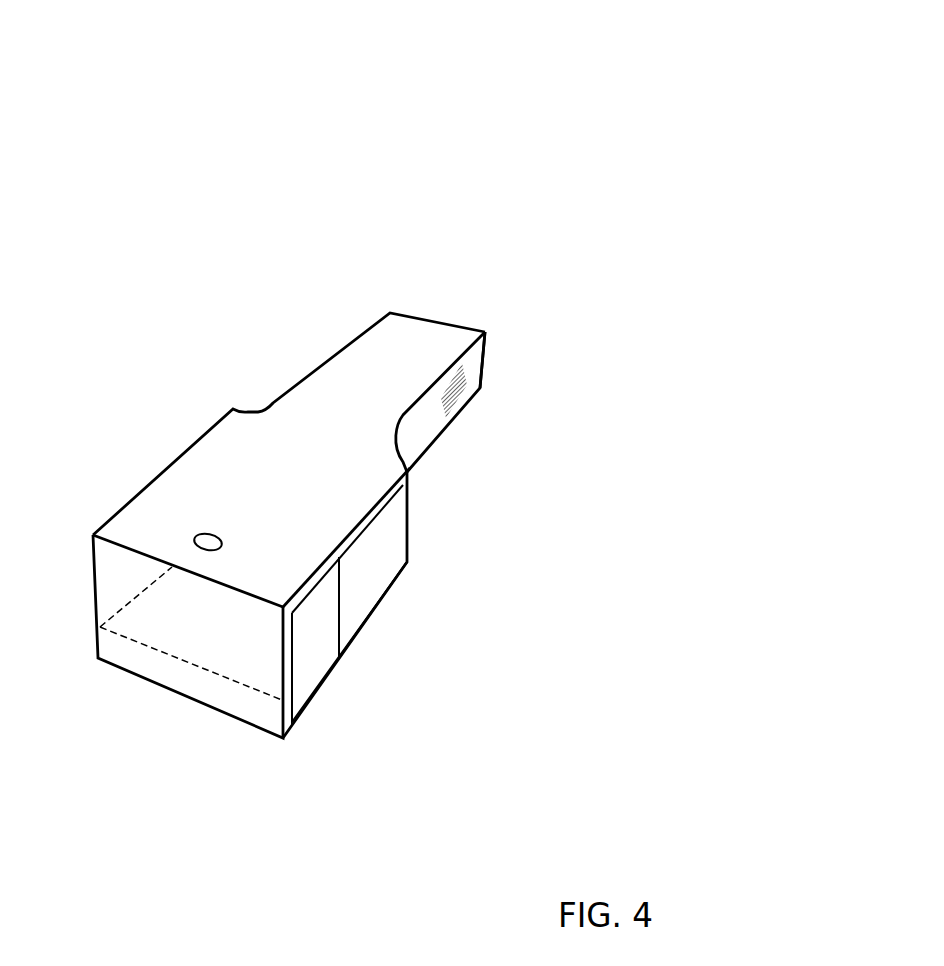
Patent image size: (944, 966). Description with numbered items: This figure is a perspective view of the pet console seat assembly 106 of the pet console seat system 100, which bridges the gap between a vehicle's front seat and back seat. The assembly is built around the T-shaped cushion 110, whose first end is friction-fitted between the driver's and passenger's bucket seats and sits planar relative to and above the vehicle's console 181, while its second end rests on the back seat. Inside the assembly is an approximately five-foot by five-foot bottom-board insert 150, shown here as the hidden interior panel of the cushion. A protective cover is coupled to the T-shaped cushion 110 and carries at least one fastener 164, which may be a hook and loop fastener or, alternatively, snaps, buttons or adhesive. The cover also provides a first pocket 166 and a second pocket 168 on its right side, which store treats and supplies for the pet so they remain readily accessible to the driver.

The pet console seat system 100 is at (488, 106).
The pet console seat assembly 106 is at (444, 298).
The T-shaped cushion 110 is at (305, 481).
The console 181 is at (483, 316).
The fastener 164 is at (465, 378).
The bottom-board insert 150 is at (180, 663).
The first pocket 166 is at (310, 659).
The second pocket 168 is at (377, 552).